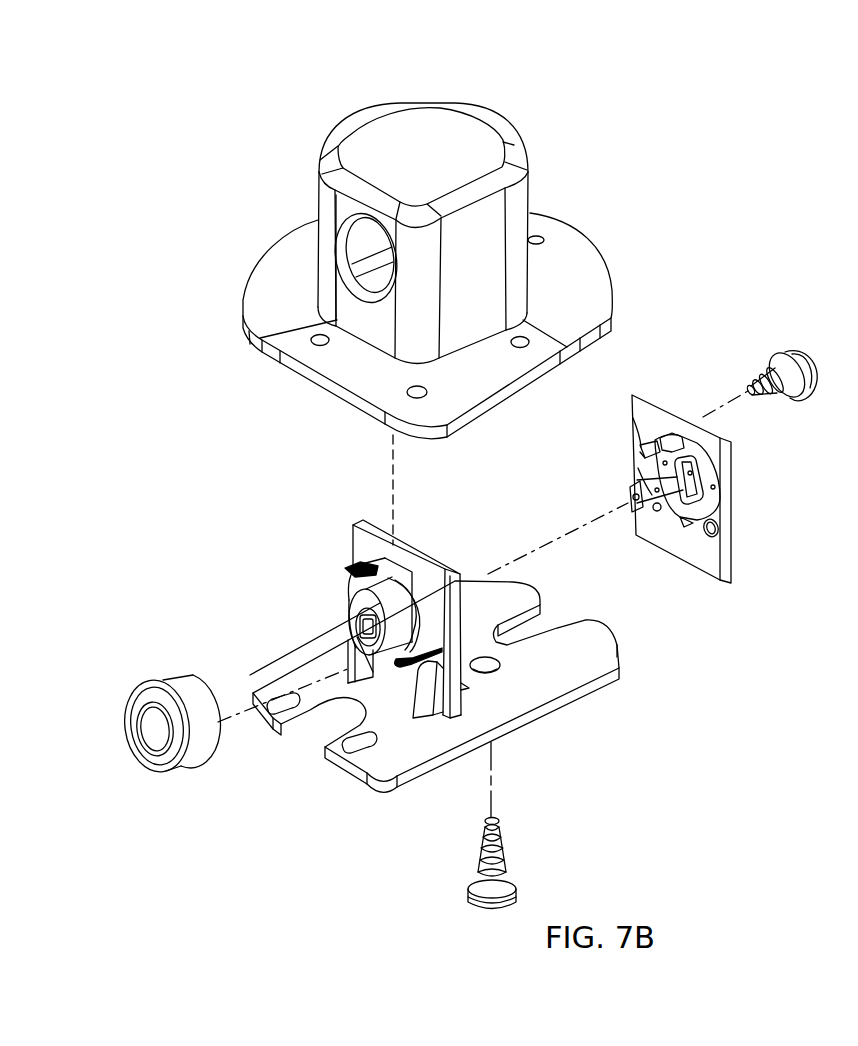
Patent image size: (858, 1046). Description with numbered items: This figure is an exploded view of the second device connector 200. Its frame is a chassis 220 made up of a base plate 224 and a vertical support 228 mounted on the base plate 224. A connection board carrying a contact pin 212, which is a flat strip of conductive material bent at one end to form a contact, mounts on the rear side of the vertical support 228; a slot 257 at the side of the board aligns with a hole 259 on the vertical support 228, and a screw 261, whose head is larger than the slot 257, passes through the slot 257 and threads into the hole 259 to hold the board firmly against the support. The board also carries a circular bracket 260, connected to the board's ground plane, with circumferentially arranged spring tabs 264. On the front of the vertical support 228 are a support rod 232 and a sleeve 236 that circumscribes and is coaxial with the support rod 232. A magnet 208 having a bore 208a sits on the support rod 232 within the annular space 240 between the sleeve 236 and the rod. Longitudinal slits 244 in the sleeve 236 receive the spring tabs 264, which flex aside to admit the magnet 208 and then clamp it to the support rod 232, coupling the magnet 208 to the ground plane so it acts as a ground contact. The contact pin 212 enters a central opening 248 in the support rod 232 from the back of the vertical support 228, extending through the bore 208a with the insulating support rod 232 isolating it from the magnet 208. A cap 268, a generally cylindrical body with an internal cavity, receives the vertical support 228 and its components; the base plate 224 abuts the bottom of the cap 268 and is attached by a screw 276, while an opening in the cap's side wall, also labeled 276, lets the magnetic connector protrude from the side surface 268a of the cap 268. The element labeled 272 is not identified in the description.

The second device connector 200 is at (365, 96).
The cap 268 is at (477, 132).
The side surface of cap 268a is at (327, 204).
The screw / opening 276 is at (342, 240).
The base flange 272 is at (265, 287).
The screw 261 is at (790, 353).
The spring tabs 264 is at (678, 438).
The slot 257 is at (650, 450).
The circular bracket 260 is at (712, 473).
The contact pin 212 is at (645, 533).
The vertical support 228 is at (363, 527).
The longitudinal slits 244 is at (405, 577).
The sleeve 236 is at (427, 598).
The hole 259 is at (355, 582).
The support rod 232 is at (366, 590).
The annular space 240 is at (363, 599).
The central opening 248 is at (362, 626).
The magnet 208 is at (165, 682).
The bore 208a is at (162, 742).
The base plate 224 is at (600, 680).
The chassis 220 is at (583, 697).